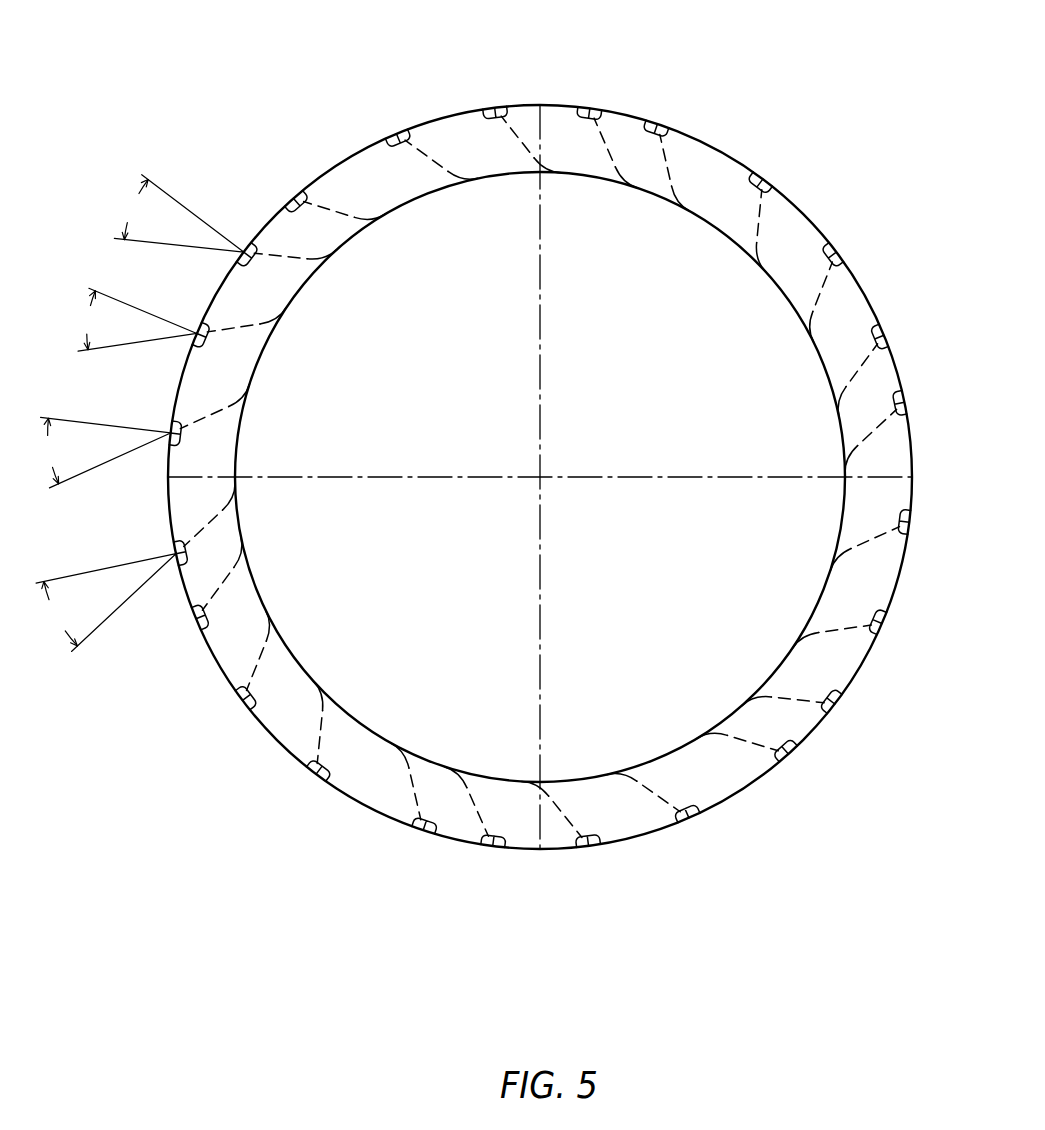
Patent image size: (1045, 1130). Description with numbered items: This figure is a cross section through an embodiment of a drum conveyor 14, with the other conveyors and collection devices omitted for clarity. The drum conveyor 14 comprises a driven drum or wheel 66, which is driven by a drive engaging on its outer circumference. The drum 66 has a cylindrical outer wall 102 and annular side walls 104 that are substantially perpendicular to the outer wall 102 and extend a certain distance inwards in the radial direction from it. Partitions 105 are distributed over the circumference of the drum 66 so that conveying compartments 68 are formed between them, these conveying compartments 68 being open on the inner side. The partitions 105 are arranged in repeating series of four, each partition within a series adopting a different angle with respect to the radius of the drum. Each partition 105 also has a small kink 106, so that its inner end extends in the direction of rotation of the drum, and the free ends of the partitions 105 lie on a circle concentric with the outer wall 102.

The drum conveyor 14 is at (470, 432).
The driven drum 66 is at (540, 477).
The conveying compartments 68 is at (680, 760).
The cylindrical outer wall 102 is at (795, 203).
The annular side walls 104 is at (255, 588).
The partitions 105 is at (230, 329).
The kink 106 is at (747, 238).